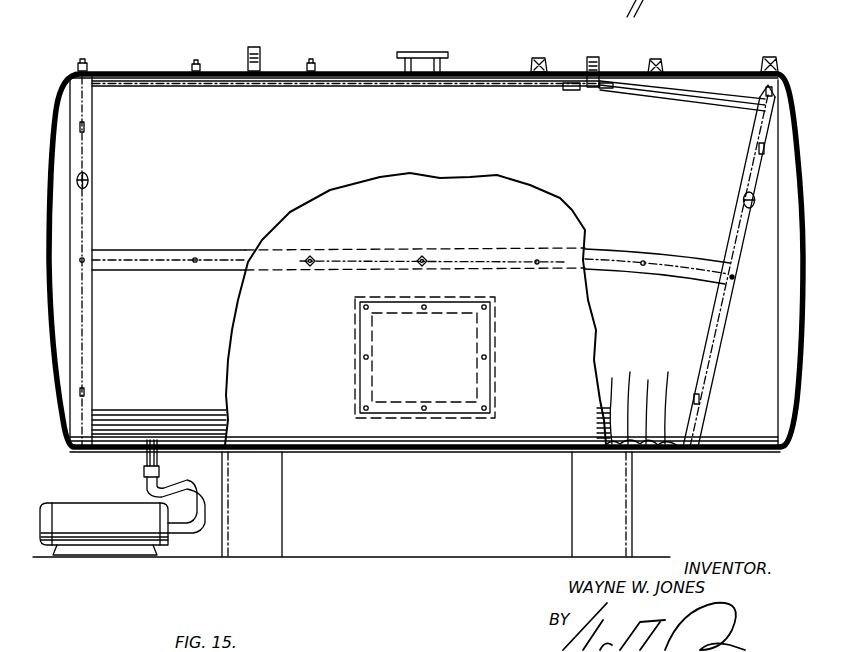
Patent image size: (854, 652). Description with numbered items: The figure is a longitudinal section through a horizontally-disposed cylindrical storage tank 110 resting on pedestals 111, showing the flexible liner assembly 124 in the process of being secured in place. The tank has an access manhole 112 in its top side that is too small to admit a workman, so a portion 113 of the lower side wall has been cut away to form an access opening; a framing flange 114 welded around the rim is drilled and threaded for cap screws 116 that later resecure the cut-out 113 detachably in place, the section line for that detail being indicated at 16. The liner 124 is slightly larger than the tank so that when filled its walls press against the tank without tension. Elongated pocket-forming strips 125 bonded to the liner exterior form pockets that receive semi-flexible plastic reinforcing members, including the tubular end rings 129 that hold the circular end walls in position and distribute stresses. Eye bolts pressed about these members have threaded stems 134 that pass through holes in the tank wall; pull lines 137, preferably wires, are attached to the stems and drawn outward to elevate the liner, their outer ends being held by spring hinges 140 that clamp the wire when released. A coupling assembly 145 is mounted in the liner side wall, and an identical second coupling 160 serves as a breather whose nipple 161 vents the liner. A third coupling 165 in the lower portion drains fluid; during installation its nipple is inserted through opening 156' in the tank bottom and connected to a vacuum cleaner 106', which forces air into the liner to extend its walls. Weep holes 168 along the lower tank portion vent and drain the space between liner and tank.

The cylindrical storage tank 110 is at (697, 68).
The liner assembly 124 is at (133, 99).
The pocket-forming strips 125 is at (127, 249).
The threaded stems 134 is at (85, 126).
The coupling assembly 145 is at (263, 52).
The manhole flange 112 is at (429, 53).
The pull lines 137 is at (535, 60).
The spring hinges 140 is at (538, 58).
The nipple 161 is at (588, 62).
The second coupling 160 is at (607, 68).
The tubular rings 129 is at (744, 200).
The cut-out portion 113 is at (465, 327).
The framing flange 114 is at (495, 372).
The cap screws 116 is at (362, 355).
The section line 16 is at (424, 392).
The opening 156' is at (158, 427).
The third coupling 165 is at (160, 458).
The weep holes 168 is at (112, 452).
The pedestals 111 is at (282, 481).
The vacuum cleaner 106' is at (104, 548).